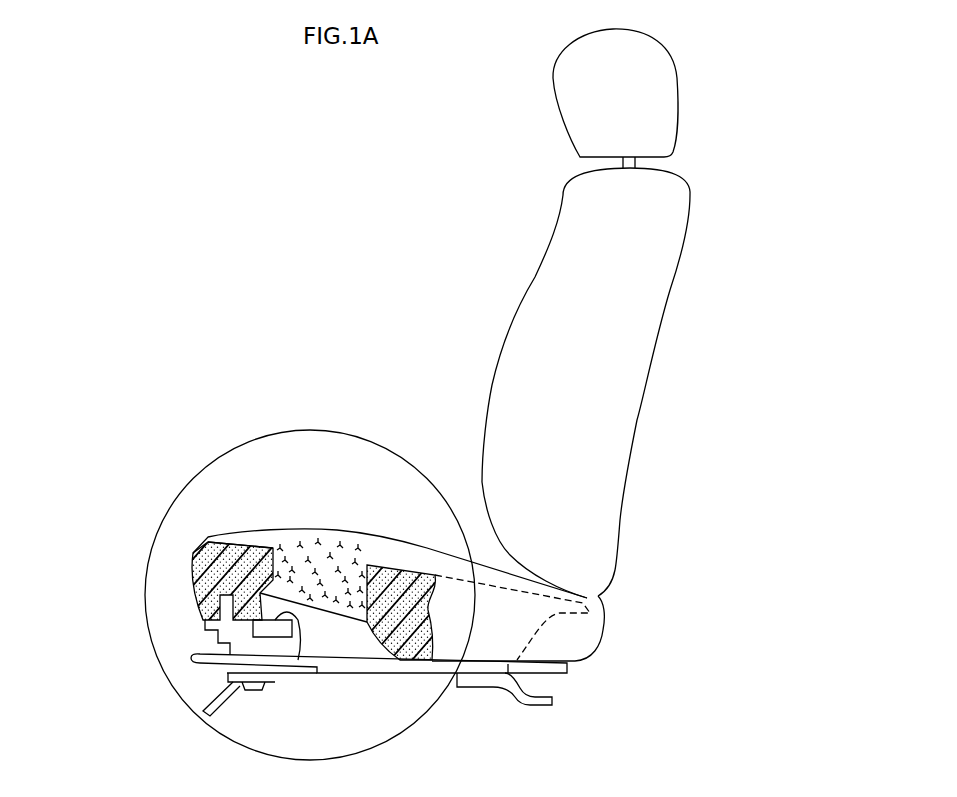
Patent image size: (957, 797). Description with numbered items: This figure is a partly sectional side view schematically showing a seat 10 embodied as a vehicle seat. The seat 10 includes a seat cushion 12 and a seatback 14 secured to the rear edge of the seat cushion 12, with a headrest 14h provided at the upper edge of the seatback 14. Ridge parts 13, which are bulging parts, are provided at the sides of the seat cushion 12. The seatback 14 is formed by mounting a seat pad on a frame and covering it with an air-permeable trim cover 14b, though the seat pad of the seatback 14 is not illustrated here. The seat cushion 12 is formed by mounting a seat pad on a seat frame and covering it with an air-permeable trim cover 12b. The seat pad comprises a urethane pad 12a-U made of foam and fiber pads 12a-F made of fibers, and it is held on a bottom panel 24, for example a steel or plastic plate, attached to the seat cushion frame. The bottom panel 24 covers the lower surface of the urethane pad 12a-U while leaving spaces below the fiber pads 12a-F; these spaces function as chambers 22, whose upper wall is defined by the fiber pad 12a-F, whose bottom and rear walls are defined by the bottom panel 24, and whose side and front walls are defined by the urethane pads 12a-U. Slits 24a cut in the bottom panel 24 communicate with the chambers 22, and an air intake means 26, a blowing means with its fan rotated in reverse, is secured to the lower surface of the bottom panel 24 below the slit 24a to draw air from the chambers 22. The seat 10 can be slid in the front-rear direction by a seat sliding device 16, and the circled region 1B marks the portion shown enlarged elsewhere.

The seat 10 is at (337, 243).
The seatback 14 is at (633, 312).
The headrest 14h is at (667, 67).
The air-permeable trim cover 14b is at (535, 277).
The seat cushion 12 is at (326, 523).
The urethane pad 12a-U is at (222, 540).
The fiber pad 12a-F is at (360, 558).
The air-permeable trim cover 12b is at (190, 578).
The ridge parts 13 is at (283, 537).
The chambers 22 is at (288, 595).
The bottom panel 24 is at (342, 692).
The slits 24a is at (285, 612).
The air intake means 26 is at (257, 632).
The seat sliding device 16 is at (422, 682).
The region shown in FIG. 1B is at (177, 497).